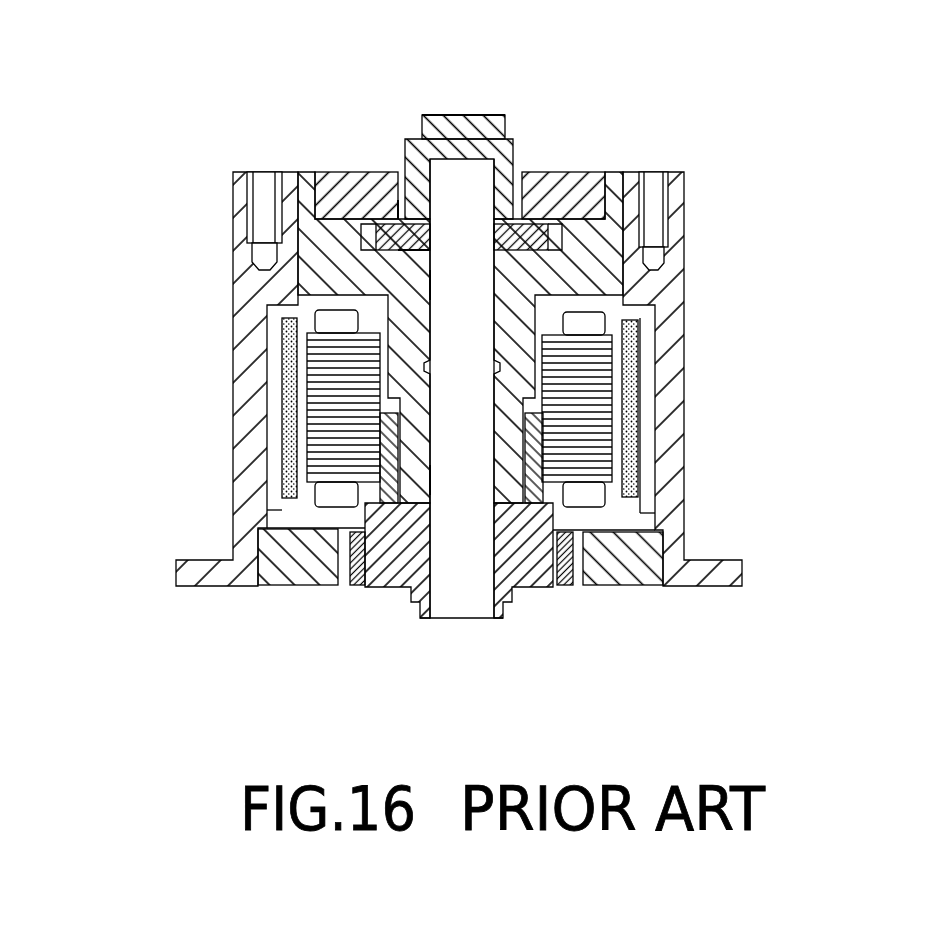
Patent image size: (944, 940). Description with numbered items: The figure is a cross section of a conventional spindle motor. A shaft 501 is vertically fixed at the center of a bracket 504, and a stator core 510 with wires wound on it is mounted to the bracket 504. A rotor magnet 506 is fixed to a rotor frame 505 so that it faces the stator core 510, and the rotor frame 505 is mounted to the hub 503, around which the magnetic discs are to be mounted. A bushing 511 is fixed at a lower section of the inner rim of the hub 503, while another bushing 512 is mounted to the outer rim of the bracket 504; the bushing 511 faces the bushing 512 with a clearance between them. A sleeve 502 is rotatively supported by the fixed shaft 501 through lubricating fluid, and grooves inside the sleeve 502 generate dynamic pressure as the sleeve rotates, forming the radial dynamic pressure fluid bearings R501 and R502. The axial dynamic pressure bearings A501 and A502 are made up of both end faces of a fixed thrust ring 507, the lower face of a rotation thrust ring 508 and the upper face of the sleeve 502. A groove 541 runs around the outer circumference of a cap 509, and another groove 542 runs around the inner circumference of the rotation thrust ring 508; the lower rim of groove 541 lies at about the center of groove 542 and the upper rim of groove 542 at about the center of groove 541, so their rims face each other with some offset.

The shaft 501 is at (481, 183).
The sleeve 502 is at (625, 217).
The hub 503 is at (673, 268).
The bracket 504 is at (530, 563).
The rotor frame 505 is at (644, 383).
The rotor magnet 506 is at (631, 442).
The fixed thrust ring 507 is at (372, 234).
The rotation thrust ring 508 is at (293, 172).
The cap 509 is at (503, 116).
The stator core 510 is at (588, 461).
The bushing 511 is at (620, 577).
The bushing 512 is at (352, 585).
The groove 541 is at (572, 172).
The groove 542 is at (446, 118).
The axial dynamic pressure bearing A501 is at (397, 217).
The axial dynamic pressure bearing A502 is at (403, 251).
The radial dynamic pressure fluid bearing R501 is at (430, 283).
The radial dynamic pressure fluid bearing R502 is at (430, 478).